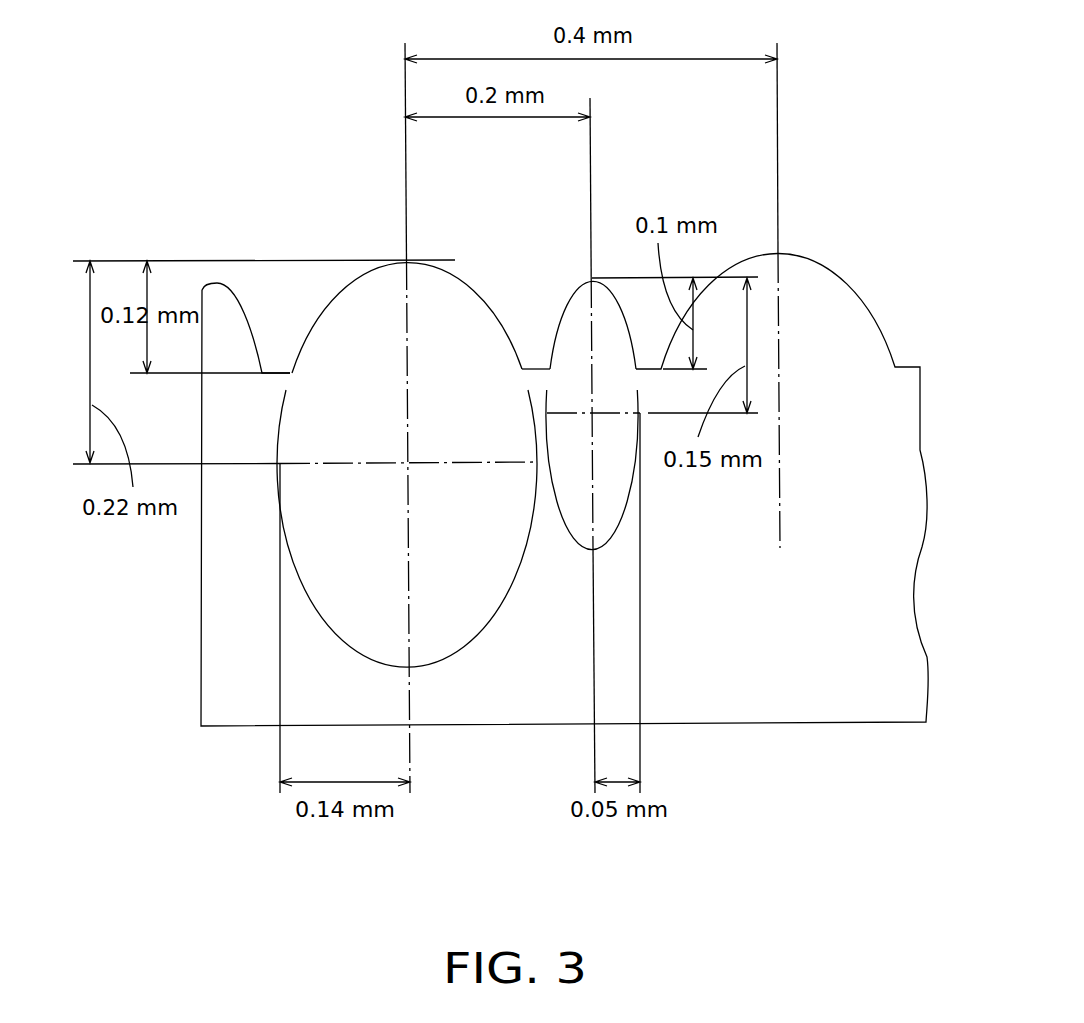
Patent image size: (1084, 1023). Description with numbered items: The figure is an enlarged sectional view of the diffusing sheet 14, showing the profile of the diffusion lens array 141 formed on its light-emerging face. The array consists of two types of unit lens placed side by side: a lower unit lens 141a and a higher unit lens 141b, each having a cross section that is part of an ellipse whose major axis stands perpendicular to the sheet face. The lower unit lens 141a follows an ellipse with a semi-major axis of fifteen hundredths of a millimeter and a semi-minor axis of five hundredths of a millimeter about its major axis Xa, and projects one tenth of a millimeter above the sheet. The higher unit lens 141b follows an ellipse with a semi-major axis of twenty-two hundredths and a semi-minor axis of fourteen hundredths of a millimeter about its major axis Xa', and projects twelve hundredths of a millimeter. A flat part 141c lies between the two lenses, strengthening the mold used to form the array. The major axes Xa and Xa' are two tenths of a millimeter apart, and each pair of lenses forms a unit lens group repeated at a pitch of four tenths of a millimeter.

The diffusing sheet 14 is at (848, 190).
The diffusion lens array 141 is at (588, 203).
The lower unit lens 141a is at (577, 283).
The higher unit lens 141b is at (456, 262).
The flat part 141c is at (537, 343).
The major axis of the lower unit lens ellipse Xa is at (623, 478).
The major axis of the higher unit lens ellipse Xa' is at (407, 528).